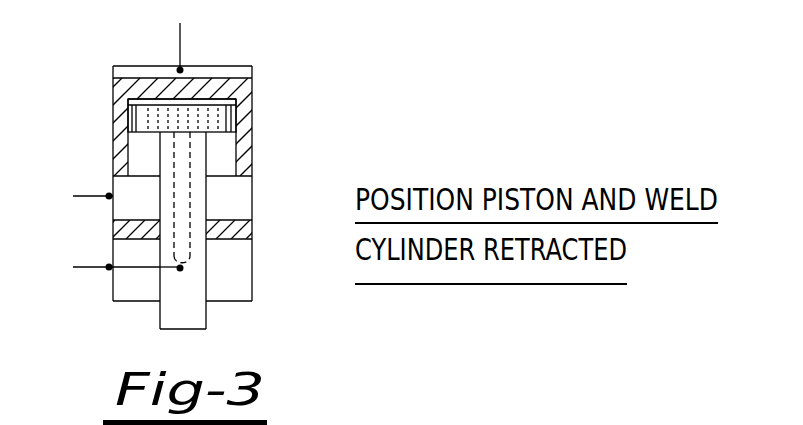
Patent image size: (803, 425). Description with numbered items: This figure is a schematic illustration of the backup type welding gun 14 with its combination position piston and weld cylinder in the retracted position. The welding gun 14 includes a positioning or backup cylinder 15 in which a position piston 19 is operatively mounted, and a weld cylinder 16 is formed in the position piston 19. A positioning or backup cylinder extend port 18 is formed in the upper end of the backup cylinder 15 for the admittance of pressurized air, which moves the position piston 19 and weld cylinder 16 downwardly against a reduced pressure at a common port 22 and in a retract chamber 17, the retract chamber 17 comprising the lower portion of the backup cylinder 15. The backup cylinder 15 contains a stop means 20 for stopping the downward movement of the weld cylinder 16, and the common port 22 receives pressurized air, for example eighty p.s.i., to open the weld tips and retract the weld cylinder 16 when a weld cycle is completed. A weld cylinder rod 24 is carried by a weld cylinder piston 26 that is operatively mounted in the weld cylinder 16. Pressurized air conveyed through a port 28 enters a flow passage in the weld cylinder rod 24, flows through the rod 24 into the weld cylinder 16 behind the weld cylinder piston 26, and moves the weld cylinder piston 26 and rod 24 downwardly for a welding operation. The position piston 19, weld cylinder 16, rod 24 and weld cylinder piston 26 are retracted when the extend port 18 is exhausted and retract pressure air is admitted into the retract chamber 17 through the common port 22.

The backup type welding gun 14 is at (258, 291).
The positioning or backup cylinder 15 is at (251, 91).
The weld cylinder 16 is at (240, 147).
The retract chamber 17 is at (227, 198).
The positioning or backup cylinder extend port 18 is at (179, 68).
The position piston 19 is at (213, 86).
The stop means 20 is at (233, 233).
The common port 22 is at (108, 200).
The weld cylinder rod 24 is at (197, 317).
The weld cylinder piston 26 is at (246, 108).
The port 28 is at (109, 270).